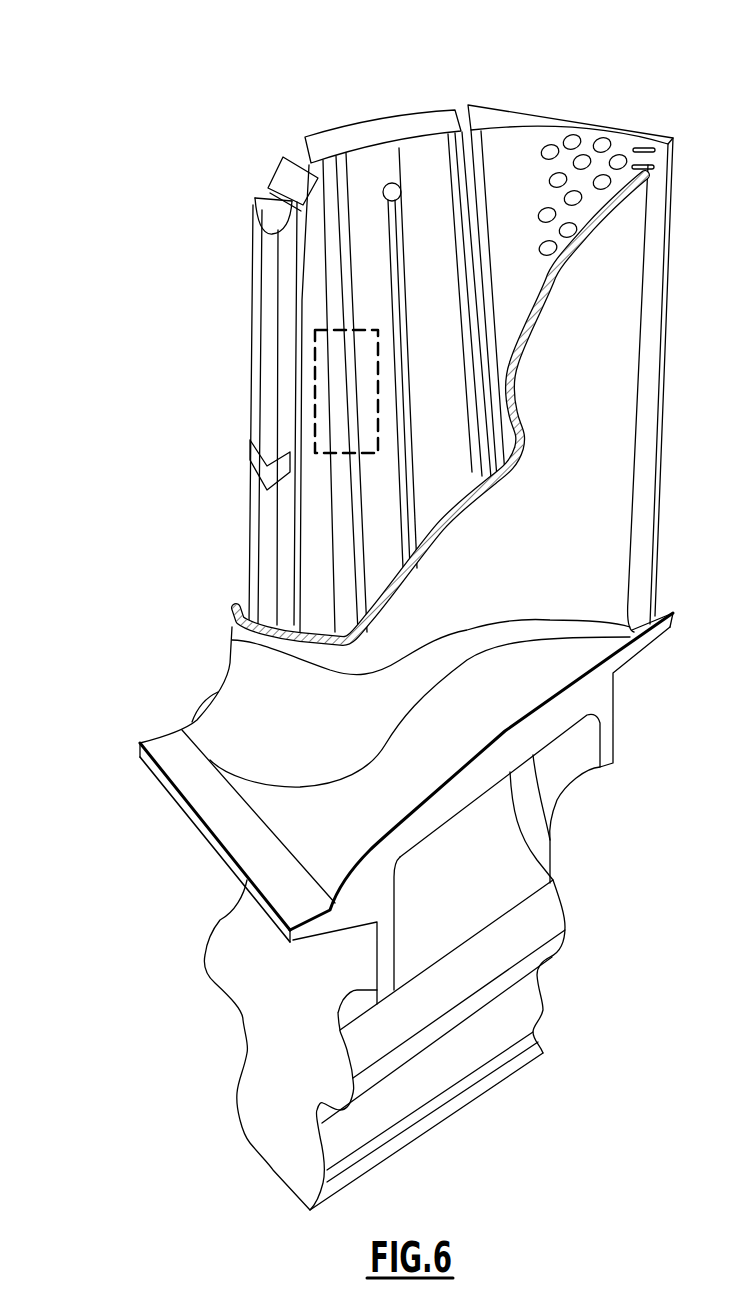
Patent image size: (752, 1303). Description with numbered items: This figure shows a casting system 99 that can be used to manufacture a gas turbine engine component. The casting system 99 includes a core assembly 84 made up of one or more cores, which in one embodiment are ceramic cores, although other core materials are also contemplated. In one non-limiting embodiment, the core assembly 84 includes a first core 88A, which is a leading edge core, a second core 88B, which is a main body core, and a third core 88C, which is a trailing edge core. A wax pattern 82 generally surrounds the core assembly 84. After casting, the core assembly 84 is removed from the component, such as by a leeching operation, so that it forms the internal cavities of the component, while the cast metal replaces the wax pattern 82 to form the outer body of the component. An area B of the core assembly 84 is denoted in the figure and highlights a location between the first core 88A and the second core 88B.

The casting system 99 is at (112, 176).
The core assembly 84 is at (394, 80).
The first core 88A is at (271, 200).
The second core 88B is at (351, 134).
The third core 88C is at (529, 100).
The wax pattern 82 is at (608, 420).
The area B is at (300, 361).